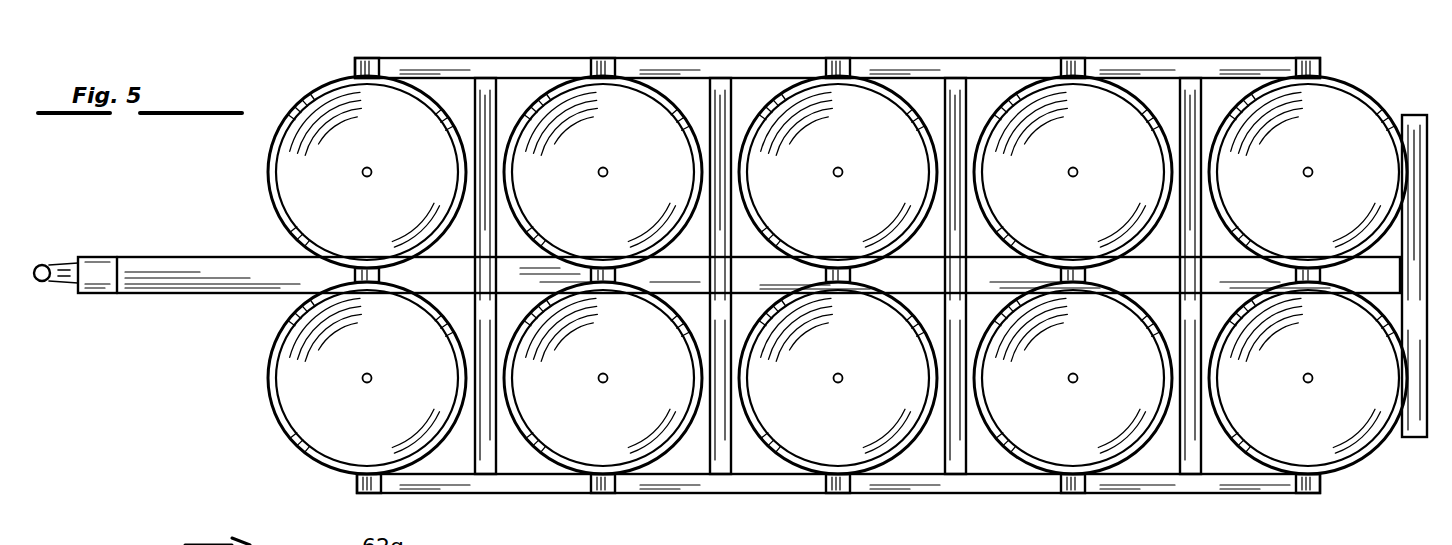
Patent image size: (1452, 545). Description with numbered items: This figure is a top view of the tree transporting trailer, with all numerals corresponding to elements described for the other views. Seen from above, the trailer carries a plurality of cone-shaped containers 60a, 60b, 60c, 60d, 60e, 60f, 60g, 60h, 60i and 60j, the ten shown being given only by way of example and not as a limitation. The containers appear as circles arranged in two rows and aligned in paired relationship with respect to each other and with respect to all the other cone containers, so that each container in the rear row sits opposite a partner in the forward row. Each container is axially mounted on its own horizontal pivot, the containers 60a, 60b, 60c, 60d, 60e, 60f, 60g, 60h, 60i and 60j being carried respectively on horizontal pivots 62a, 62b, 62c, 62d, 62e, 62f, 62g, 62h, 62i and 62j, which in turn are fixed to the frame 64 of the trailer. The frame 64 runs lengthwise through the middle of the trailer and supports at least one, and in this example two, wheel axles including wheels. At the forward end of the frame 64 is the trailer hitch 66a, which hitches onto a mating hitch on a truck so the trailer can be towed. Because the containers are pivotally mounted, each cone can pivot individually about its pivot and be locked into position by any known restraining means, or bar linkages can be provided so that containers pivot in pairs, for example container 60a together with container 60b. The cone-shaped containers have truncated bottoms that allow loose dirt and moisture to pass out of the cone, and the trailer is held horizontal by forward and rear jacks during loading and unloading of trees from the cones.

The cone-shaped container 60a is at (290, 440).
The cone-shaped container 60b is at (320, 88).
The cone-shaped container 60c is at (668, 452).
The cone-shaped container 60d is at (668, 100).
The cone-shaped container 60e is at (903, 452).
The cone-shaped container 60f is at (903, 100).
The cone-shaped container 60g is at (1137, 452).
The cone-shaped container 60h is at (1138, 100).
The cone-shaped container 60i is at (1355, 465).
The cone-shaped container 60j is at (1352, 92).
The horizontal pivot 62a is at (372, 494).
The horizontal pivot 62b is at (375, 59).
The horizontal pivot 62c is at (606, 494).
The horizontal pivot 62d is at (612, 47).
The horizontal pivot 62e is at (832, 494).
The horizontal pivot 62f is at (842, 47).
The horizontal pivot 62g is at (1081, 494).
The horizontal pivot 62h is at (1070, 59).
The horizontal pivot 62i is at (1310, 494).
The horizontal pivot 62j is at (1308, 59).
The frame 64 is at (158, 292).
The trailer hitch 66a is at (42, 282).